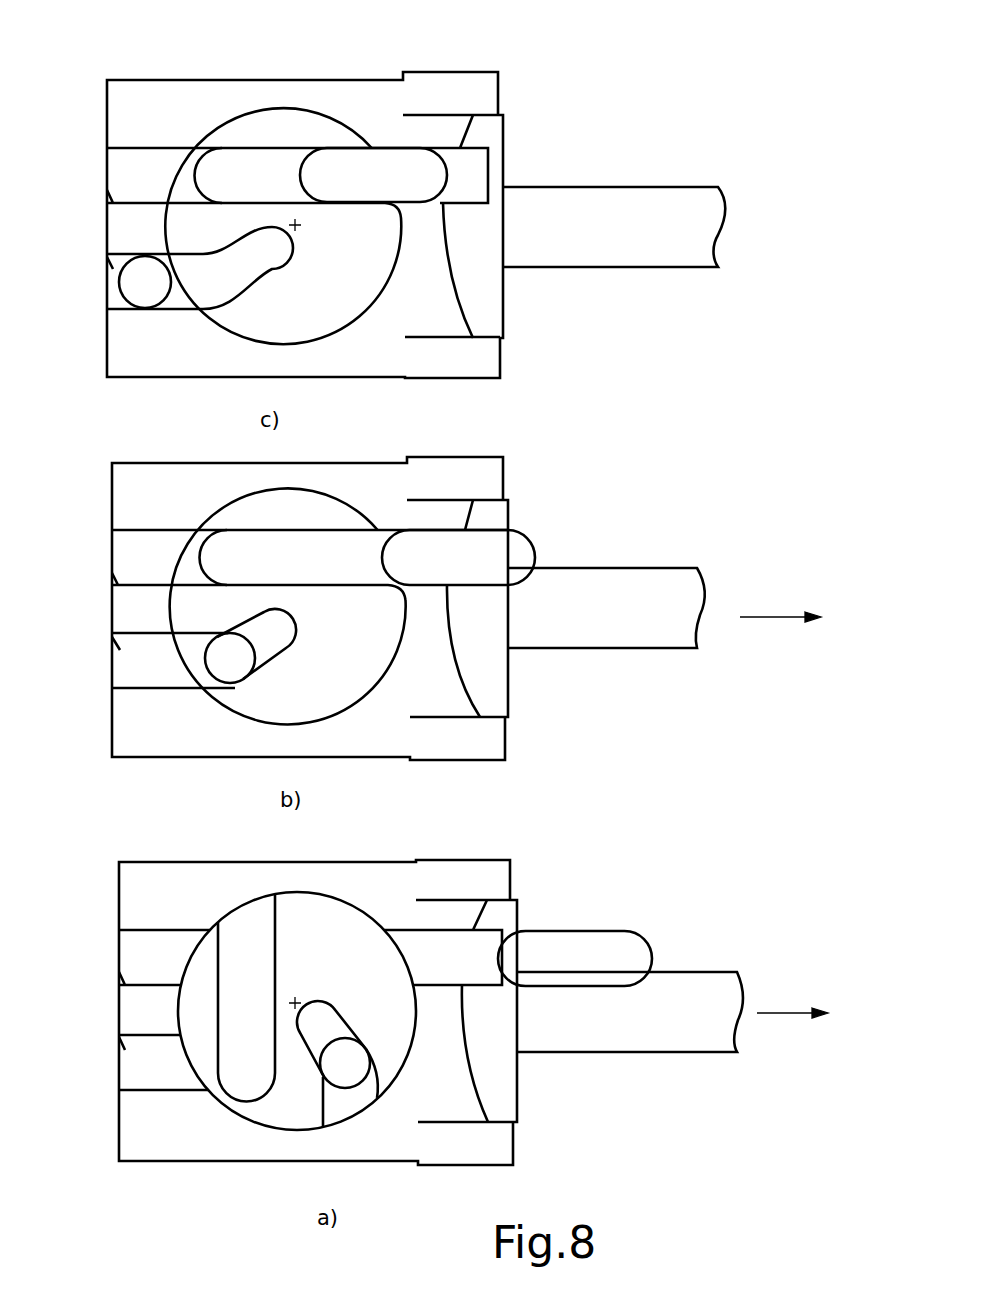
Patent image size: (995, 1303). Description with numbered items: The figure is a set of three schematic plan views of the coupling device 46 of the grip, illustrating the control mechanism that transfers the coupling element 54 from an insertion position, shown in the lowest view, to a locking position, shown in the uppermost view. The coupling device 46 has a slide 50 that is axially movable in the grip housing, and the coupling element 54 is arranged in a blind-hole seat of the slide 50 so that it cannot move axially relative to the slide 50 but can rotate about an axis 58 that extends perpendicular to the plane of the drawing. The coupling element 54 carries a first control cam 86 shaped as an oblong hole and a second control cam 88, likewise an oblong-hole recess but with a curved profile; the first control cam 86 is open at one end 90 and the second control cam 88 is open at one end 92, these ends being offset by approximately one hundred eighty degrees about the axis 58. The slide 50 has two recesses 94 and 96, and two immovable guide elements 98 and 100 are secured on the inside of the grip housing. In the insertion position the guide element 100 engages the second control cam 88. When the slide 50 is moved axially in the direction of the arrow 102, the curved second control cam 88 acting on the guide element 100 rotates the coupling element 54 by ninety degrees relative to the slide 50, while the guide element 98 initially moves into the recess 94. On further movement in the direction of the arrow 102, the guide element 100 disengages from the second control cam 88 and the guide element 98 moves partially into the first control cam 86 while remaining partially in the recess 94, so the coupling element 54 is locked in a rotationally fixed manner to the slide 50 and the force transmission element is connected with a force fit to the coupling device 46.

The coupling device 46 is at (573, 126).
The slide 50 is at (135, 108).
The coupling element 54 is at (275, 115).
The axis 58 is at (296, 229).
The first control cam 86 is at (280, 170).
The second control cam 88 is at (208, 290).
The open end of the first control cam 90 is at (248, 918).
The open end of the second control cam 92 is at (345, 1112).
The recess 94 is at (472, 163).
The recess 96 is at (112, 270).
The guide element 98 is at (365, 165).
The guide element 100 is at (137, 290).
The arrow 102 is at (773, 618).